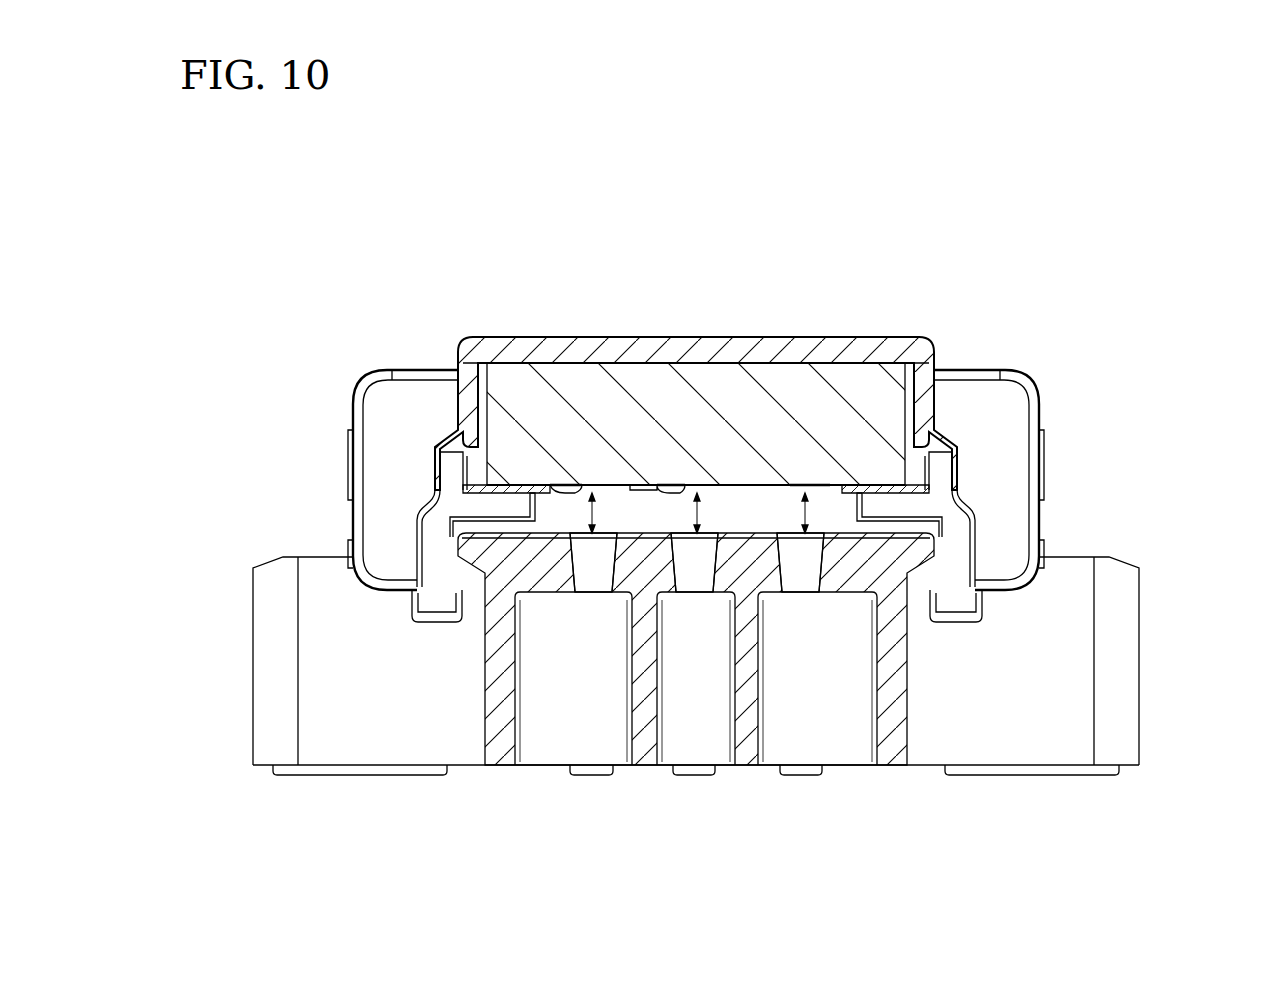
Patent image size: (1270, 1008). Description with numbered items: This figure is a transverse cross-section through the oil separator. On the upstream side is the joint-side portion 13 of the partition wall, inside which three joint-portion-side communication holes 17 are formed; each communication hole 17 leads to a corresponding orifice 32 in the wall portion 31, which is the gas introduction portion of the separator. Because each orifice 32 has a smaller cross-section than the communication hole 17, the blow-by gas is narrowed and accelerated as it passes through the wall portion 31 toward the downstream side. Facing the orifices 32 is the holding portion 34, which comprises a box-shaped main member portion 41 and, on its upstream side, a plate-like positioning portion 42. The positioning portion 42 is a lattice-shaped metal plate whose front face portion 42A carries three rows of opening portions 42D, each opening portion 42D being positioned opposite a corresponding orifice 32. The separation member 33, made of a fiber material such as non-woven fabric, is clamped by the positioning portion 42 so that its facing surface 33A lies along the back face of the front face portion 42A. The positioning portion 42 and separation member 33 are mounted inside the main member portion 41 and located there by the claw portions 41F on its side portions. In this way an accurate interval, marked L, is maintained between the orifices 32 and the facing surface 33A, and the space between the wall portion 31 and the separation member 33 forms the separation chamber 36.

The joint-side portion 13 is at (913, 710).
The joint-portion-side communication hole 17 is at (519, 686).
The wall portion 31 is at (487, 650).
The orifice 32 is at (598, 598).
The separation member 33 is at (880, 418).
The facing surface 33A is at (801, 590).
The holding portion 34 is at (887, 338).
The separation chamber 36 is at (620, 512).
The main member portion 41 is at (459, 338).
The claw portion 41F is at (440, 602).
The positioning portion 42 is at (460, 480).
The front face portion 42A is at (890, 518).
The opening portion 42D is at (579, 486).